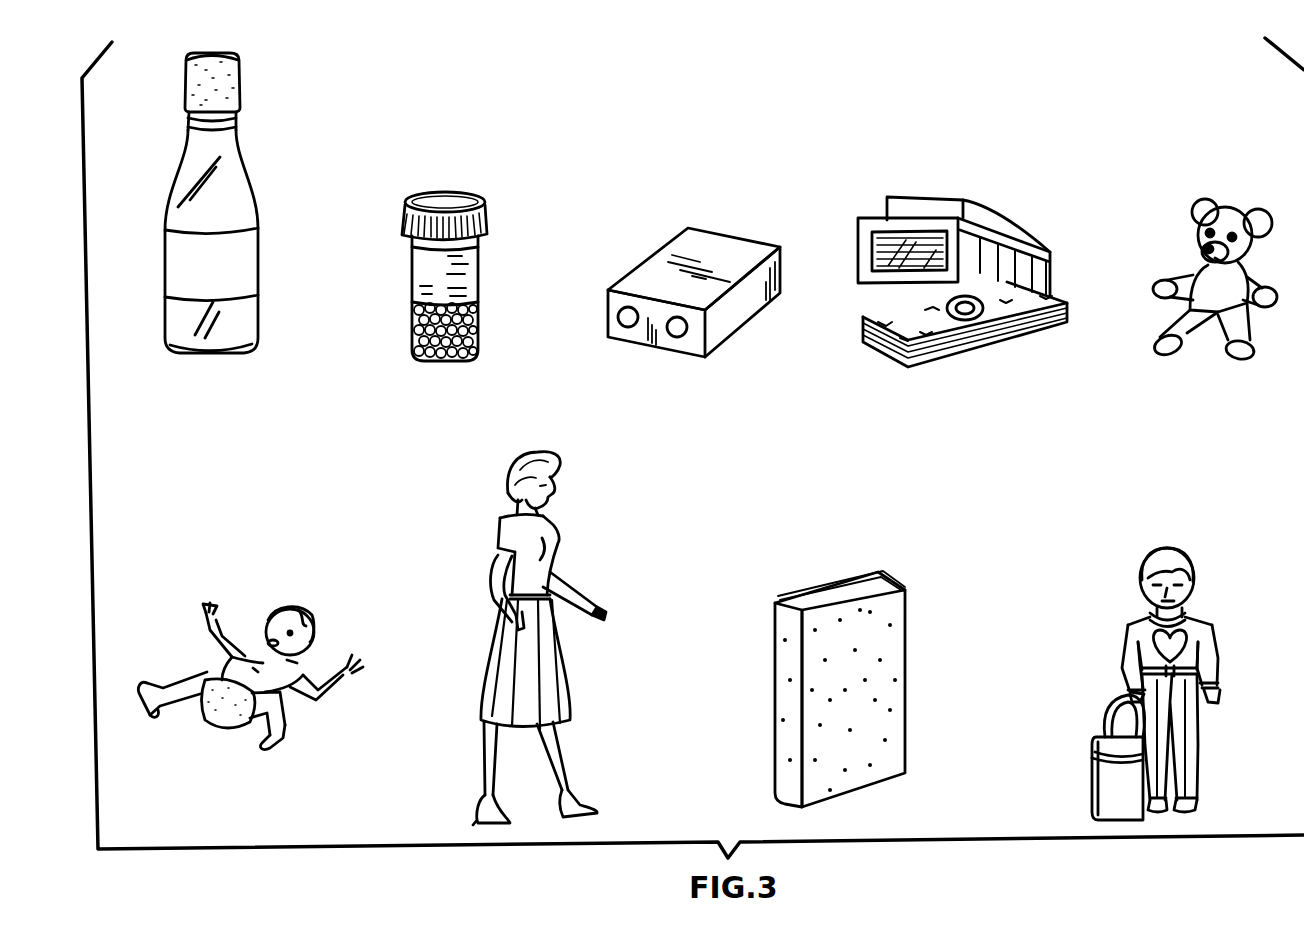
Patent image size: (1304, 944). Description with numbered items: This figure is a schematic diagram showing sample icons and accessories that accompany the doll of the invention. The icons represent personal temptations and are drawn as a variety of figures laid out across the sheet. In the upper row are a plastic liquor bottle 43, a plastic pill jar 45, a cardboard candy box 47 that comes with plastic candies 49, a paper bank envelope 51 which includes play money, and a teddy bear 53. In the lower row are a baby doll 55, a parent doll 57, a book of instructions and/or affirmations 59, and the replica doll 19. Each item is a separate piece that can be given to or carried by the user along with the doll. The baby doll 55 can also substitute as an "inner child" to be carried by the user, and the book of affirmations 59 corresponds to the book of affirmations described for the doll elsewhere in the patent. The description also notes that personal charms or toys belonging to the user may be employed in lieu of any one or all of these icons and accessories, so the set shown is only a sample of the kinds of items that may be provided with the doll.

The replica doll 19 is at (1147, 637).
The plastic liquor bottle 43 is at (222, 195).
The plastic pill jar 45 is at (471, 195).
The cardboard candy box 47 is at (691, 301).
The plastic candies 49 is at (628, 327).
The paper bank envelope 51 is at (880, 233).
The teddy bear 53 is at (1190, 268).
The baby doll 55 is at (252, 667).
The parent doll 57 is at (503, 533).
The book of instructions and/or affirmations 59 is at (817, 675).